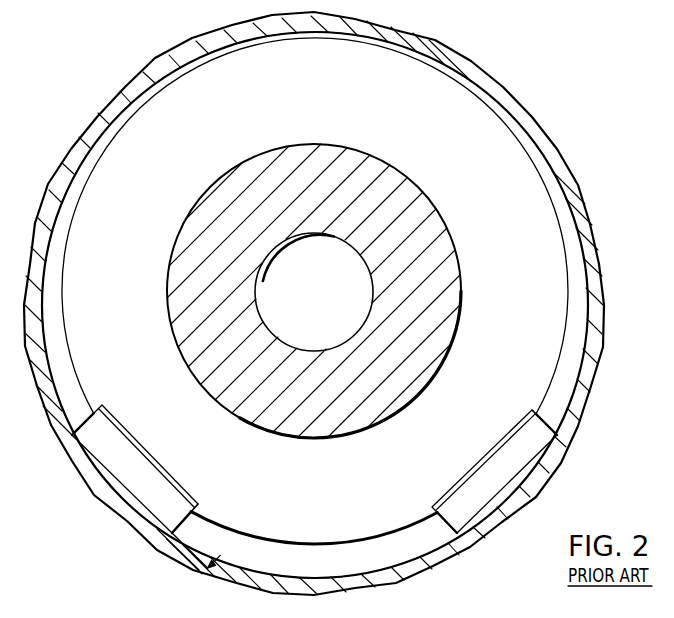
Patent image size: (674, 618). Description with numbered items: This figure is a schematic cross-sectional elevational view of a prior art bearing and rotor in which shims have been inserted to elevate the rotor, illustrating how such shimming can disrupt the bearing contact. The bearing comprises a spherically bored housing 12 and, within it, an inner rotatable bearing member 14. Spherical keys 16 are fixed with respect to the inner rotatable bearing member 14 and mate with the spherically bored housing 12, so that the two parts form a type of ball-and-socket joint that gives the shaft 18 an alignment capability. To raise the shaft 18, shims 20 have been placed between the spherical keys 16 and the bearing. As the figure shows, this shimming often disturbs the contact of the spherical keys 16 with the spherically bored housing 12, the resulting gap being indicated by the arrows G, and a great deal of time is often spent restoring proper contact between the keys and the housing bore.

The spherically bored housing 12 is at (600, 265).
The inner rotatable bearing member 14 is at (553, 243).
The spherical keys 16 is at (112, 476).
The shaft 18 is at (433, 207).
The shims 20 is at (199, 504).
The arrows G is at (202, 574).